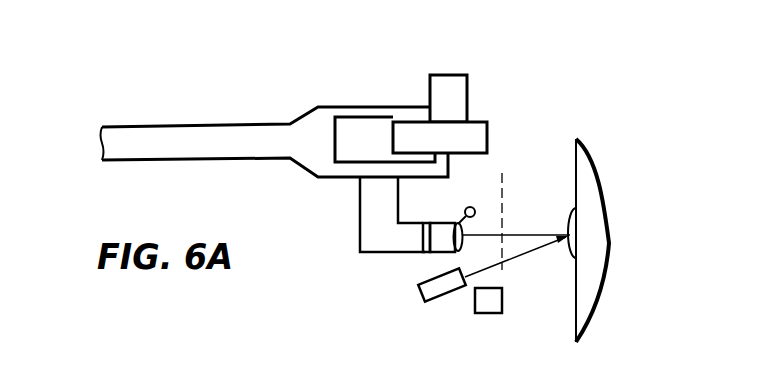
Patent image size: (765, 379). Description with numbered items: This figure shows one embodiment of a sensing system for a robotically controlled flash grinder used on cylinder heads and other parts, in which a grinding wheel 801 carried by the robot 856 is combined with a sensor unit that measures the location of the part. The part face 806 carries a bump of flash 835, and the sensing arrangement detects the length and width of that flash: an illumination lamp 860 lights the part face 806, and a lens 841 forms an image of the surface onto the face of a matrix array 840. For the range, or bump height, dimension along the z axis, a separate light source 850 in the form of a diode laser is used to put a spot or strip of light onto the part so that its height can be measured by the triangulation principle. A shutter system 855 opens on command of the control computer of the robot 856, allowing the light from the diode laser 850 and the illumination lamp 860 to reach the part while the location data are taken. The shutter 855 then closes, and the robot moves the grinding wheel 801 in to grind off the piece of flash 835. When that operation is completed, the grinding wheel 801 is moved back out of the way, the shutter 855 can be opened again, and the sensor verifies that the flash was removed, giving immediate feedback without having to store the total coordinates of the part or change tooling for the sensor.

The robot 856 is at (208, 133).
The grinding wheel 801 is at (477, 125).
The matrix array 840 is at (423, 235).
The lens 841 is at (450, 240).
The lamp 860 is at (468, 207).
The bump of flash 835 is at (568, 217).
The part face 806 is at (576, 162).
The light source 850 is at (438, 298).
The shutter system 855 is at (500, 270).